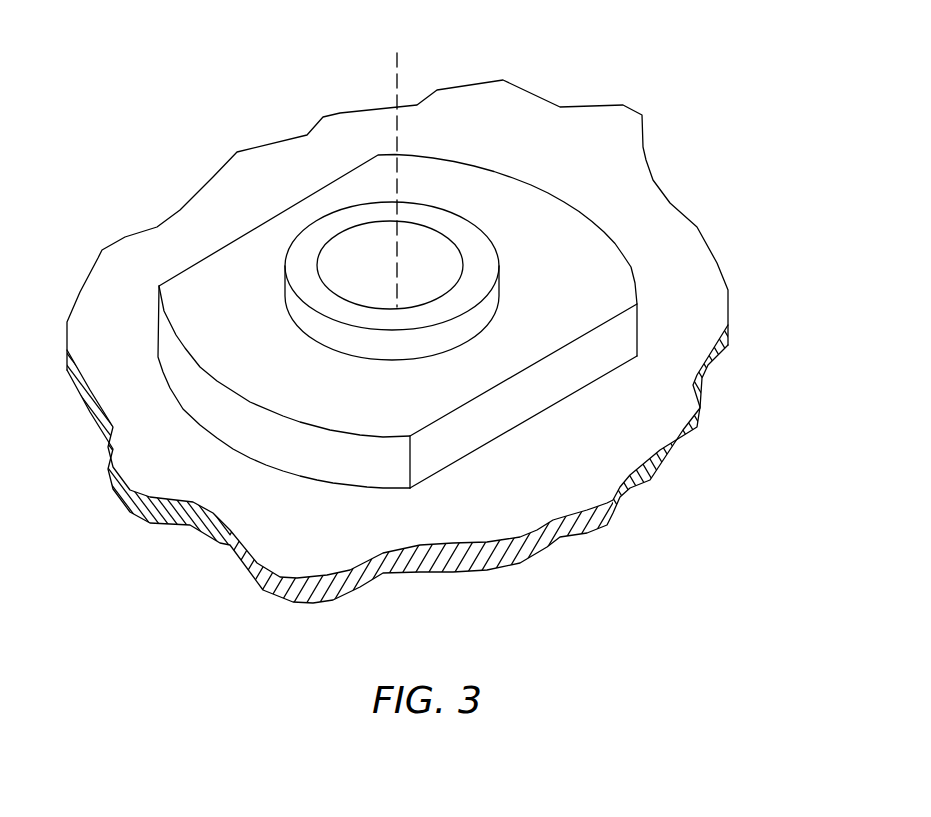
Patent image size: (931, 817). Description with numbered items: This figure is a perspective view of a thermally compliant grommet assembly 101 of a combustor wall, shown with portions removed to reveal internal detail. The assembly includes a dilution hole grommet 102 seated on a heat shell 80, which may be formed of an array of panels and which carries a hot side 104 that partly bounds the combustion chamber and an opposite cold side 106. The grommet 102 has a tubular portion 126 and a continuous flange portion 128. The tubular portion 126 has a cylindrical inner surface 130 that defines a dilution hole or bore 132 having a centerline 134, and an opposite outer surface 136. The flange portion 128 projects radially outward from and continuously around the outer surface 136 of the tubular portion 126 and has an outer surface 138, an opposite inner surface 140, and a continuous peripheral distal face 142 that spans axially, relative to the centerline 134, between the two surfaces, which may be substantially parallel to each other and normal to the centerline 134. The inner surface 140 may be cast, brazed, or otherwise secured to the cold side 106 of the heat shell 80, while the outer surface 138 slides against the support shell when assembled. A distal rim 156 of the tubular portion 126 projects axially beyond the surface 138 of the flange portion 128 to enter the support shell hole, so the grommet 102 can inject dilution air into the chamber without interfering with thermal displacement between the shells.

The heat shell 80 is at (677, 447).
The grommet assembly 101 is at (421, 324).
The dilution hole grommet 102 is at (622, 219).
The hot side 104 is at (223, 543).
The cold side 106 is at (157, 477).
The tubular portion 126 is at (519, 271).
The flange portion 128 is at (529, 180).
The inner surface 130 is at (347, 240).
The dilution hole 132 is at (386, 287).
The centerline 134 is at (397, 68).
The outer surface 136 is at (483, 316).
The outer surface 138 is at (461, 180).
The inner surface 140 is at (440, 470).
The distal face 142 is at (506, 403).
The distal rim 156 is at (494, 254).